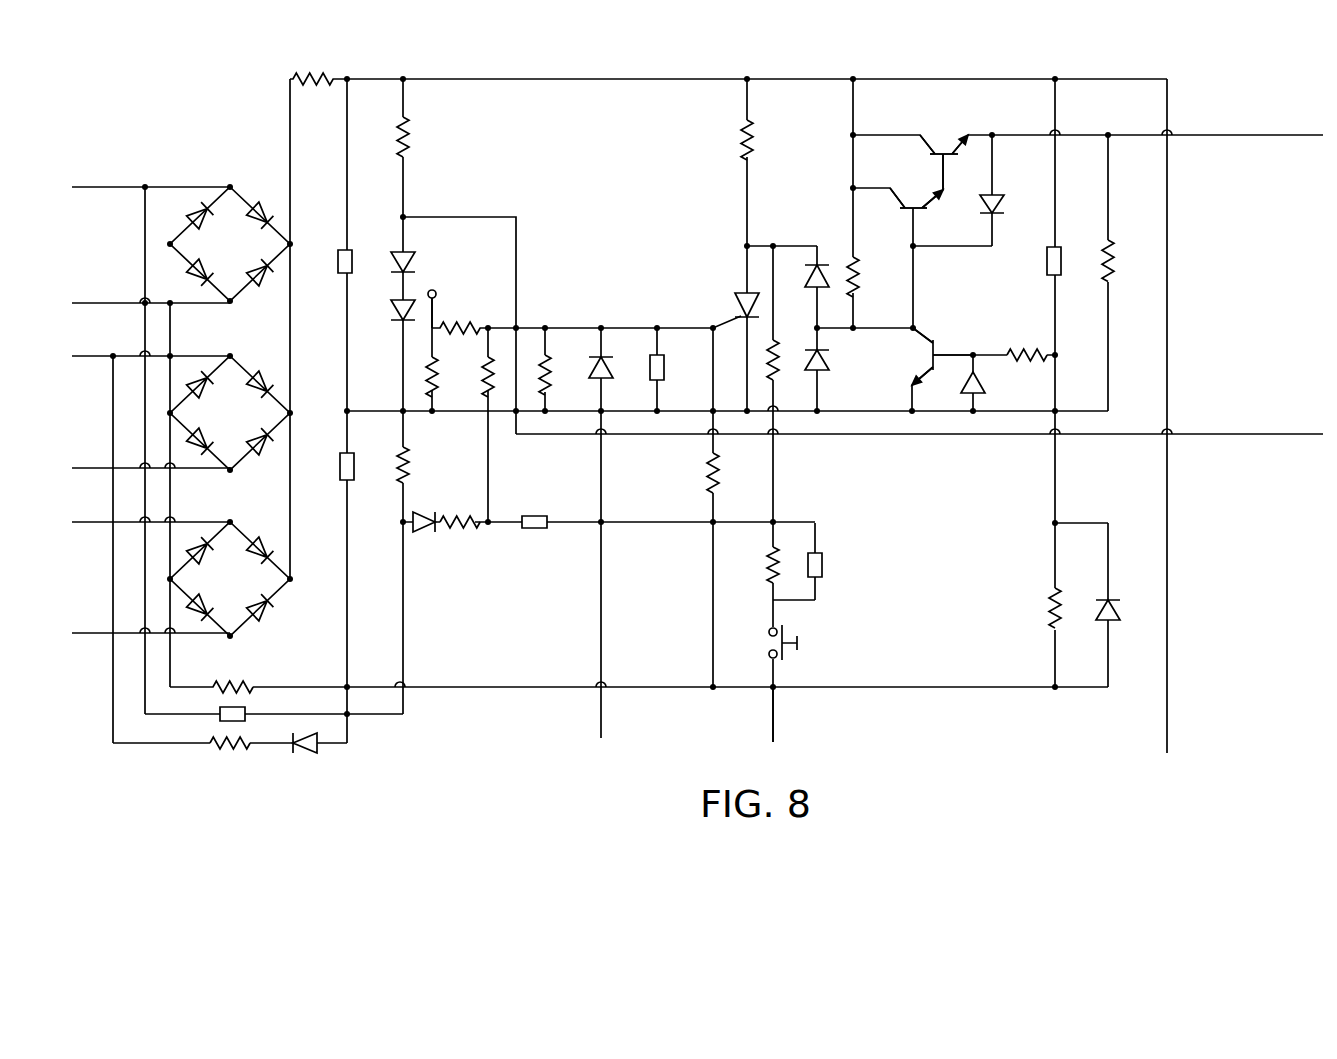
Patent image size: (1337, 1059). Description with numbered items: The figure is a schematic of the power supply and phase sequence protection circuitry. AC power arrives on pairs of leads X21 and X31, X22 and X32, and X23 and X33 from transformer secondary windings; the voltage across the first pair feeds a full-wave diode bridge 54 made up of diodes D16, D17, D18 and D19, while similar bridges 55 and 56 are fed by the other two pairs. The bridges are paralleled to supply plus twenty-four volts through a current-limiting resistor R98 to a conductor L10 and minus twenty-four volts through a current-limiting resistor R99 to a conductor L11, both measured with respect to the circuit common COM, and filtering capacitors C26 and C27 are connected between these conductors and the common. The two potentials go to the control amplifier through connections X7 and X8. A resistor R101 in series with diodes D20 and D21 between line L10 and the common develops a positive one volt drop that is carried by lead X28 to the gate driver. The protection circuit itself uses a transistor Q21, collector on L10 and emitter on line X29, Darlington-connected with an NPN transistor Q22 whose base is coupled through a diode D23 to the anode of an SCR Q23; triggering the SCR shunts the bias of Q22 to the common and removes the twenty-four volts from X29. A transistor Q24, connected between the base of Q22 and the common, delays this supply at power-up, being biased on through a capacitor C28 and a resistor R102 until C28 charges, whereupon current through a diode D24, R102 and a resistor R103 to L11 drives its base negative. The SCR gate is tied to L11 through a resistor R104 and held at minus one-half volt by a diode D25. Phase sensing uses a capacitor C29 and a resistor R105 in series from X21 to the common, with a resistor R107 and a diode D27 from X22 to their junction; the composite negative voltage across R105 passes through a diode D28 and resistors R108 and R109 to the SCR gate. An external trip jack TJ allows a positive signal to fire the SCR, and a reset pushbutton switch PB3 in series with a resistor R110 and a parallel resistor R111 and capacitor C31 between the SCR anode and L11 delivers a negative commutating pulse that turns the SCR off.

The conductor L10 is at (590, 81).
The current-limiting resistor R98 is at (322, 72).
The resistor R101 is at (410, 143).
The lead X21 is at (127, 185).
The lead X31 is at (127, 302).
The lead X22 is at (84, 340).
The lead X32 is at (120, 467).
The lead X23 is at (120, 520).
The lead X33 is at (120, 632).
The full-wave diode bridge 54 is at (234, 252).
The bridge 55 is at (237, 422).
The bridge 56 is at (237, 588).
The diode D19 is at (192, 218).
The diode D16 is at (260, 206).
The diode D18 is at (195, 280).
The diode D17 is at (254, 286).
The filtering capacitor C26 is at (336, 264).
The filtering capacitor C27 is at (338, 468).
The diode D20 is at (386, 260).
The diode D21 is at (384, 312).
The external trip jack TJ is at (437, 292).
The resistor R109 is at (480, 378).
The diode D25 is at (589, 366).
The resistor R105 is at (404, 468).
The diode D28 is at (426, 534).
The resistor R108 is at (464, 526).
The resistor R104 is at (708, 486).
The SCR Q23 is at (736, 304).
The diode D23 is at (806, 278).
The resistor R110 is at (774, 378).
The NPN transistor Q22 is at (924, 198).
The transistor Q21 is at (936, 148).
The capacitor C28 is at (1046, 264).
The line X29 is at (1236, 135).
The resistor R102 is at (996, 349).
The transistor Q24 is at (926, 358).
The diode D24 is at (986, 384).
The lead X28 is at (1241, 435).
The circuit common COM is at (350, 412).
The resistor R111 is at (762, 549).
The capacitor C31 is at (828, 566).
The reset pushbutton switch PB3 is at (766, 650).
The conductor L11 is at (458, 693).
The current-limiting resistor R99 is at (247, 682).
The capacitor C29 is at (248, 708).
The resistor R107 is at (221, 750).
The diode D27 is at (306, 756).
The connection X7 is at (775, 730).
The resistor R103 is at (1045, 616).
The connection X8 is at (1170, 688).